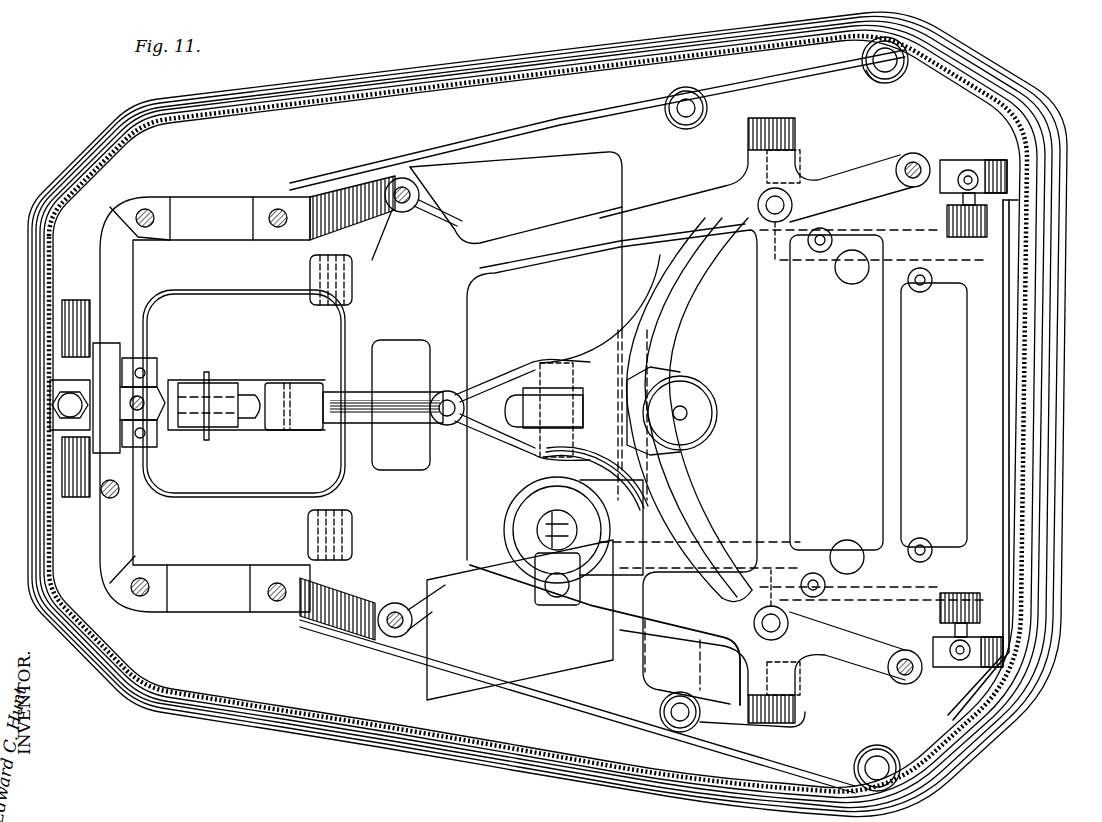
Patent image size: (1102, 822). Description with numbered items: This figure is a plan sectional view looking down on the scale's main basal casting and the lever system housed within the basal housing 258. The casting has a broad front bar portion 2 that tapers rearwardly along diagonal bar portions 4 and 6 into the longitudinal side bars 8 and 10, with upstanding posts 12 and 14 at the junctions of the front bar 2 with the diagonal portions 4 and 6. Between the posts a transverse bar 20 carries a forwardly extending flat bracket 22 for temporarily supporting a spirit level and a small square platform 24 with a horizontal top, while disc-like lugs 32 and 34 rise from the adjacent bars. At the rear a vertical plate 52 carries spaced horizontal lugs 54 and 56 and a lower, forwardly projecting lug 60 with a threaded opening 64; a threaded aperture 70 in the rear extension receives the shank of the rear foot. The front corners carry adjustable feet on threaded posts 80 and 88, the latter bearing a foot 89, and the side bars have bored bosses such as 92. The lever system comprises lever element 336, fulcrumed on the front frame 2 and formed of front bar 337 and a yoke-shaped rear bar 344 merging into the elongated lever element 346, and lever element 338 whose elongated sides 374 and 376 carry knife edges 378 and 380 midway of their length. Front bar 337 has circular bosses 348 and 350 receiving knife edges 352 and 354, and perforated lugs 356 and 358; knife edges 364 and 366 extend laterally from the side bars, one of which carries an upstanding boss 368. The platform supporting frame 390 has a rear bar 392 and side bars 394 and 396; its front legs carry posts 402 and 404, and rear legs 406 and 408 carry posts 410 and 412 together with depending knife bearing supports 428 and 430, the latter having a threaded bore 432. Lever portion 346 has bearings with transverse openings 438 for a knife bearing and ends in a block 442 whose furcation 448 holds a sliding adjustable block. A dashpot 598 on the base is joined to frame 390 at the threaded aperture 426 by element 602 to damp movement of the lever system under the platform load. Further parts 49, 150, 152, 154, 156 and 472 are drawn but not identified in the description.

The front bar portion 2 is at (978, 466).
The diagonal bar portion 4 is at (940, 727).
The diagonal bar portion 6 is at (940, 97).
The longitudinal side bar 8 is at (473, 660).
The longitudinal side bar 10 is at (518, 138).
The upstanding post 12 is at (1000, 655).
The upstanding post 14 is at (1003, 185).
The transverse intermediate bar 20 is at (628, 301).
The flat bracket 22 is at (700, 384).
The platform 24 is at (690, 528).
The disc-like lug 32 is at (850, 545).
The disc-like lug 34 is at (851, 286).
The pivot pin 49 is at (143, 412).
The vertical plate 52 is at (90, 457).
The horizontal lug 54 is at (118, 507).
The horizontal lug 56 is at (86, 302).
The forwardly projecting lug 60 is at (150, 360).
The threaded opening 64 is at (105, 382).
The vertically threaded aperture 70 is at (670, 725).
The threaded post 80 is at (900, 775).
The threaded post 88 is at (905, 57).
The foot 89 is at (893, 80).
The upstanding boss 92 is at (678, 100).
The mounting screw 150 is at (140, 597).
The mounting screw 152 is at (277, 602).
The mounting screw 154 is at (147, 209).
The mounting screw 156 is at (279, 209).
The basal housing 258 is at (1025, 342).
The lever element 336 is at (668, 322).
The front bar 337 is at (892, 386).
The lever element 338 is at (216, 290).
The yoke-shaped rear bar 344 is at (680, 515).
The elongated lever element 346 is at (408, 398).
The circular boss 348 is at (940, 608).
The circular boss 350 is at (947, 218).
The knife edge 352 is at (958, 670).
The knife edge 354 is at (968, 170).
The vertically perforated lug 356 is at (922, 540).
The vertically perforated lug 358 is at (924, 293).
The knife edge 364 is at (795, 703).
The knife edge 366 is at (797, 122).
The upstanding boss 368 is at (788, 640).
The elongated side 374 is at (477, 463).
The elongated side 376 is at (493, 357).
The knife edge 378 is at (308, 522).
The knife edge 380 is at (309, 272).
The platform supporting frame 390 is at (790, 343).
The rear bar 392 is at (453, 302).
The side bar 394 is at (677, 622).
The side bar 396 is at (556, 237).
The upstanding post 402 is at (903, 680).
The upstanding post 404 is at (910, 160).
The diagonal leg 406 is at (450, 580).
The diagonal leg 408 is at (443, 232).
The upstanding post 410 is at (382, 645).
The upstanding post 412 is at (404, 188).
The laterally disposed threaded aperture 426 is at (556, 600).
The knife bearing support 428 is at (398, 605).
The knife bearing support 430 is at (372, 262).
The vertically threaded bore 432 is at (440, 420).
The transverse opening 438 is at (597, 349).
The block-like portion 442 is at (307, 432).
The furcated portion 448 is at (254, 382).
The pin 472 is at (209, 440).
The dashpot 598 is at (540, 500).
The connecting element 602 is at (537, 540).